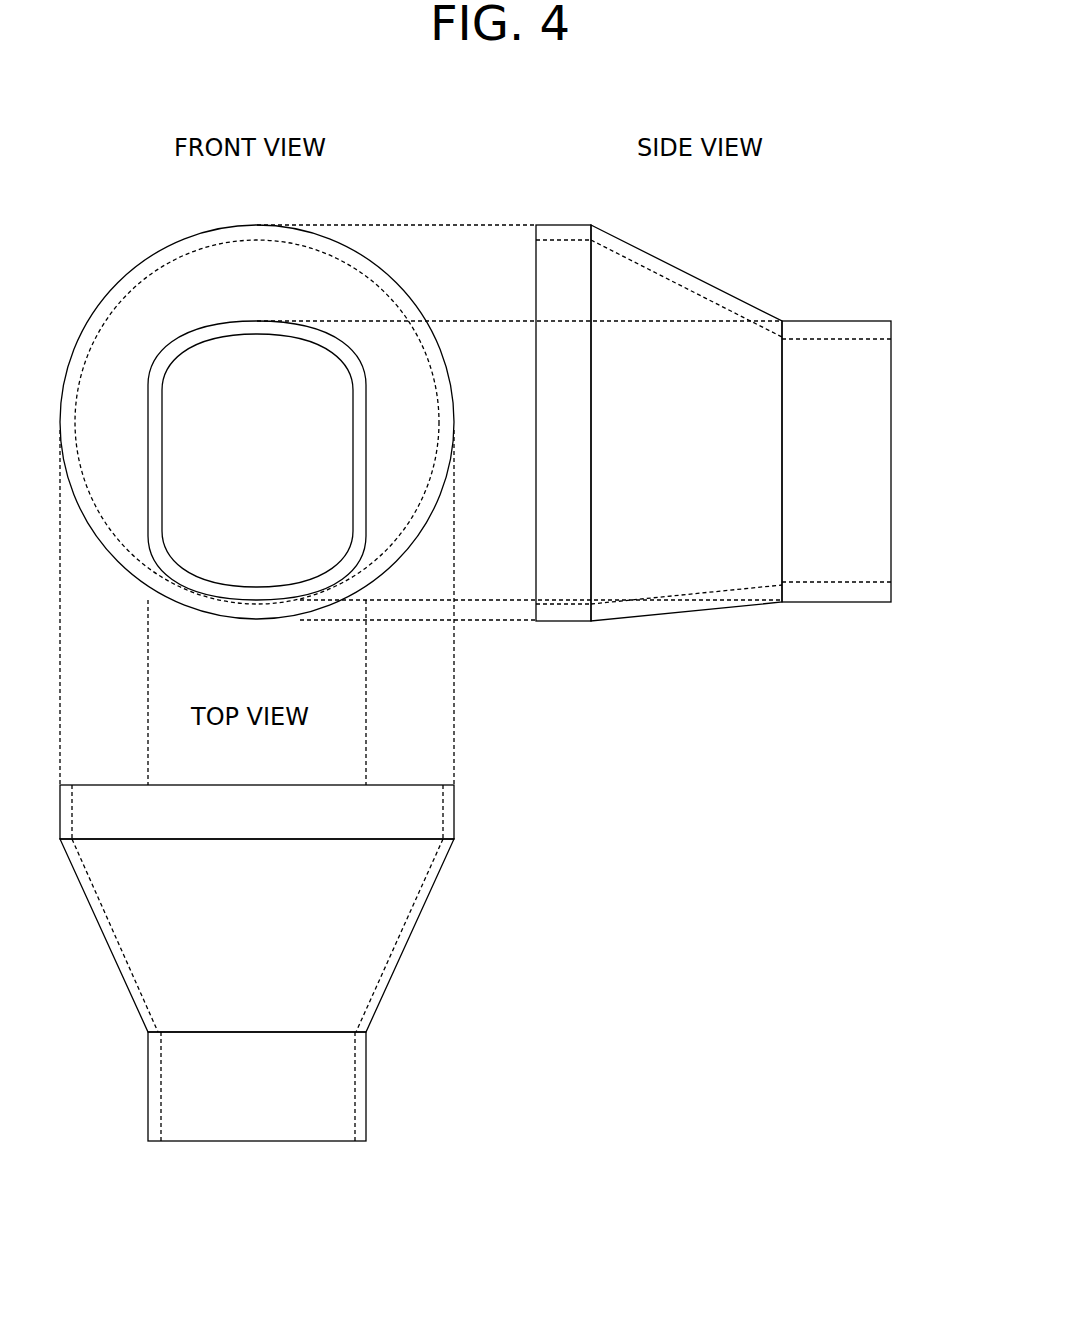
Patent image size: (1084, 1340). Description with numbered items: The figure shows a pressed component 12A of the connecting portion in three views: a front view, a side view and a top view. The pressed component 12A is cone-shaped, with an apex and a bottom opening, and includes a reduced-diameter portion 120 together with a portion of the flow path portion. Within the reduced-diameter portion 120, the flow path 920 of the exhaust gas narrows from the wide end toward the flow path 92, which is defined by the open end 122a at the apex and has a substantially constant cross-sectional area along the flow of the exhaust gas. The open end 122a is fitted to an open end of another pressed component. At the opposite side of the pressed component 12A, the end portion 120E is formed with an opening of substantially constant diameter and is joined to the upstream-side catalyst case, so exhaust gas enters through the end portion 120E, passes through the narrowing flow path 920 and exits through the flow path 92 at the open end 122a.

The pressed component 12A is at (772, 193).
The reduced-diameter portion 120 is at (386, 280).
The end portion 120E is at (560, 621).
The open end 122a is at (347, 347).
The flow path 92 is at (243, 476).
The flow path 920 is at (652, 471).